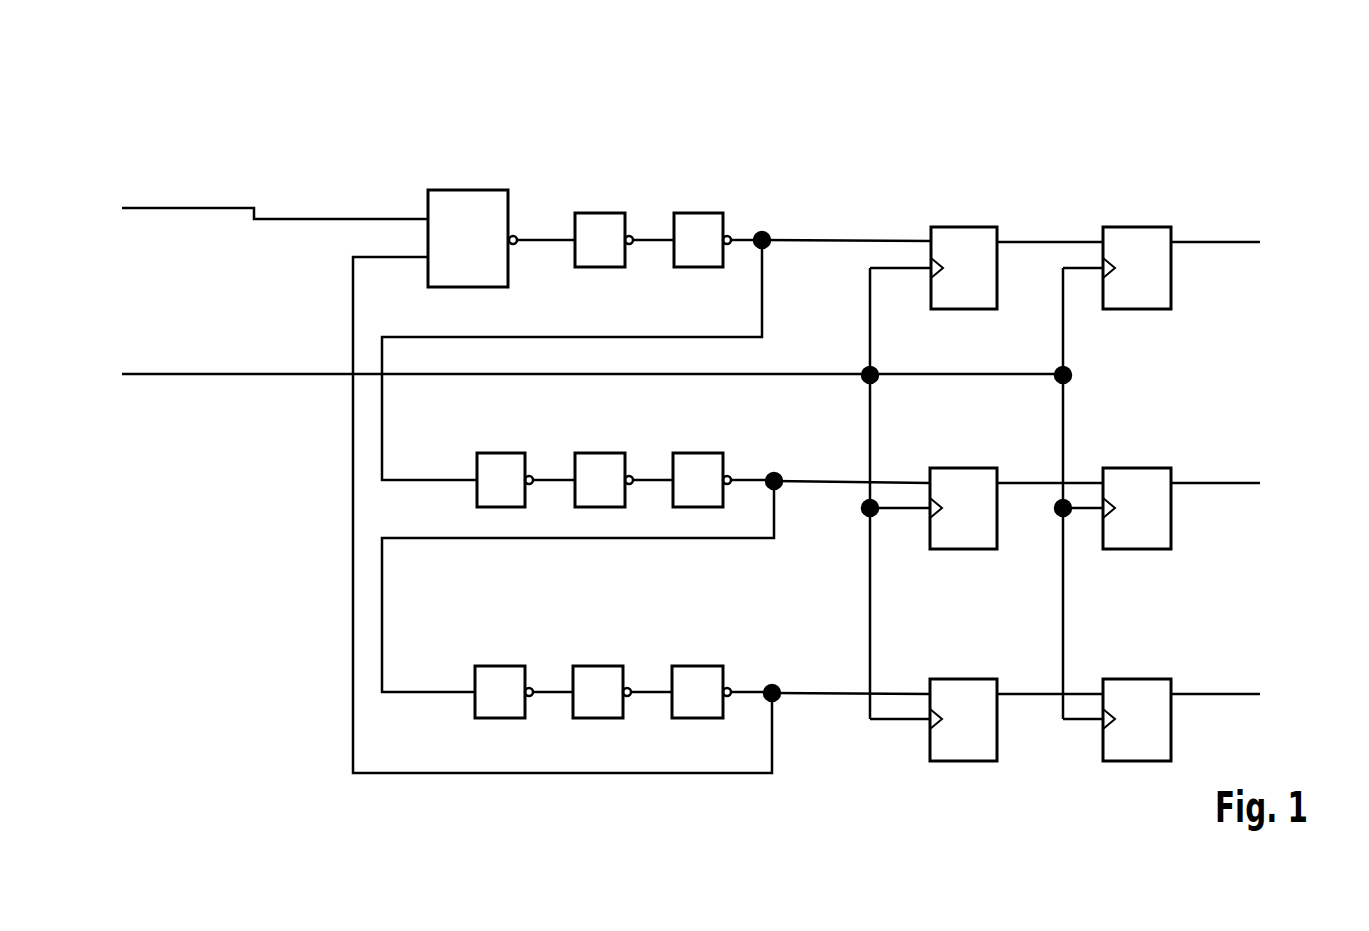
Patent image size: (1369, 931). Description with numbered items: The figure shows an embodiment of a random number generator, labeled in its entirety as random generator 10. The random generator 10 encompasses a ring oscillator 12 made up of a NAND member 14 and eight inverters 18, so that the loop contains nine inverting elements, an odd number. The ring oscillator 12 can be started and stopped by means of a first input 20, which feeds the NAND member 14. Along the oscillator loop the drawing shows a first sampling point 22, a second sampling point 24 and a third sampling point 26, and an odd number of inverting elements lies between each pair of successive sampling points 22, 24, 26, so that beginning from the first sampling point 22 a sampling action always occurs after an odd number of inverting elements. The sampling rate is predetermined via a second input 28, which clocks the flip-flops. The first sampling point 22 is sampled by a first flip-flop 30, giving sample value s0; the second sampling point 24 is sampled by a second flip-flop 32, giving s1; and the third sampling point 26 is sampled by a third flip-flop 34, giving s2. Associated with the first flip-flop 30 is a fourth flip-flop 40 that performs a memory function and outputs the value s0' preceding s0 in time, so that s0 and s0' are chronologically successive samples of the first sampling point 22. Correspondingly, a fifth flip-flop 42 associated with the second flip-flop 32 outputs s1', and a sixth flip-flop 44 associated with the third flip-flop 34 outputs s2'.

The random generator 10 is at (1214, 90).
The ring oscillator 12 is at (318, 616).
The NAND member 14 is at (468, 190).
The inverter 18 is at (599, 213).
The first input 20 is at (212, 208).
The first sampling point 22 is at (762, 232).
The second sampling point 24 is at (774, 473).
The third sampling point 26 is at (772, 685).
The second input 28 is at (210, 373).
The first flip-flop 30 is at (962, 227).
The second flip-flop 32 is at (962, 468).
The third flip-flop 34 is at (962, 679).
The fourth flip-flop 40 is at (1137, 227).
The fifth flip-flop 42 is at (1137, 468).
The sixth flip-flop 44 is at (1137, 679).